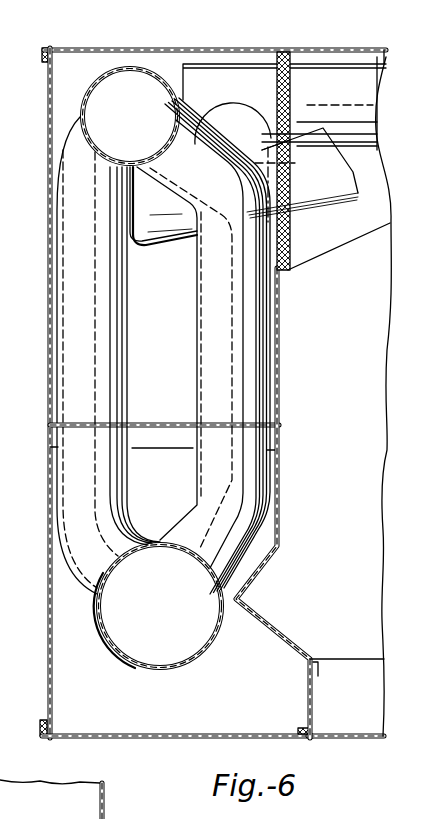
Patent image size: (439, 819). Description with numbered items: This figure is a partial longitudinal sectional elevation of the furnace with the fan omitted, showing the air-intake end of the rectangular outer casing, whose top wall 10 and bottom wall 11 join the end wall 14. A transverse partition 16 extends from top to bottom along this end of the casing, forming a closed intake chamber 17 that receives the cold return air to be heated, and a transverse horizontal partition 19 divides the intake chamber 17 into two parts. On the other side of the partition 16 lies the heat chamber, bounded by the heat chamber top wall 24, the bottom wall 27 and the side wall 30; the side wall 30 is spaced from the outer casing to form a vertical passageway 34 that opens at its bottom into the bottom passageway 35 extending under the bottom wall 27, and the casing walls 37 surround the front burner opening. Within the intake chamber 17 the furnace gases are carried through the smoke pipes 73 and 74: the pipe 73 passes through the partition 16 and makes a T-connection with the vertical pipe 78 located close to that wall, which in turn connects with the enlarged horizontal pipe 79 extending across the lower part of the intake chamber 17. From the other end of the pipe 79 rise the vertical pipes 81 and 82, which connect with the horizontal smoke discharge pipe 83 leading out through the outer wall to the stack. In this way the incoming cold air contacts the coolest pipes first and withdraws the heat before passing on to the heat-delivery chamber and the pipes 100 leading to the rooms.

The top wall 10 is at (232, 48).
The bottom wall 11 is at (222, 738).
The end wall 14 is at (50, 403).
The transverse partition 16 is at (282, 492).
The intake chamber 17 is at (62, 678).
The transverse horizontal partition 19 is at (156, 427).
The heat chamber top wall 24 is at (308, 258).
The bottom wall of heat chamber 27 is at (355, 660).
The side wall of heat chamber 30 is at (355, 272).
The vertical passageway 34 is at (0, 490).
The bottom passageway 35 is at (342, 720).
The casing walls 37 is at (51, 799).
The smoke pipe 73 is at (312, 74).
The smoke pipe 74 is at (152, 248).
The vertical pipe 78 is at (282, 166).
The enlarged horizontal pipe 79 is at (142, 668).
The vertical pipe 81 is at (205, 283).
The vertical pipe 82 is at (118, 341).
The smoke discharge pipe 83 is at (113, 67).
The pipes 100 is at (24, 39).